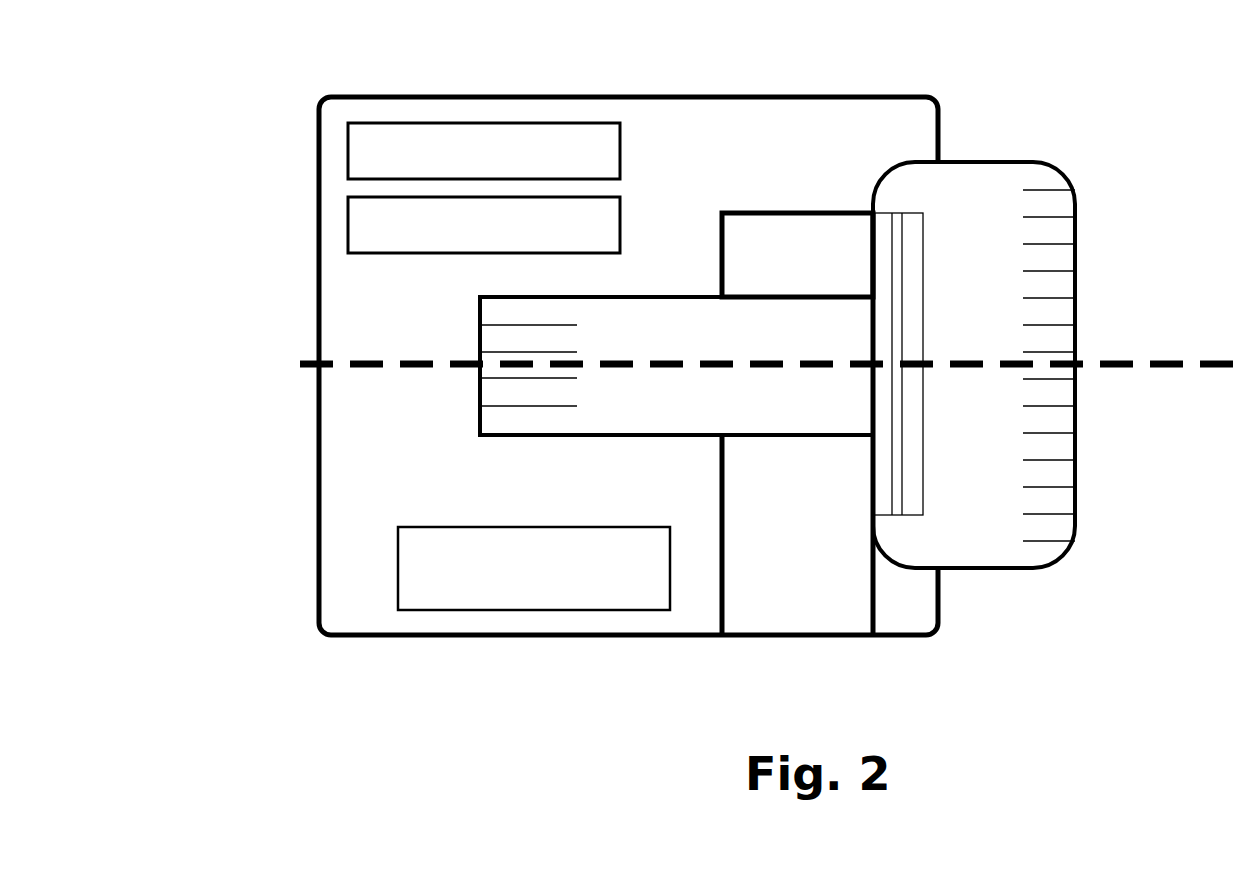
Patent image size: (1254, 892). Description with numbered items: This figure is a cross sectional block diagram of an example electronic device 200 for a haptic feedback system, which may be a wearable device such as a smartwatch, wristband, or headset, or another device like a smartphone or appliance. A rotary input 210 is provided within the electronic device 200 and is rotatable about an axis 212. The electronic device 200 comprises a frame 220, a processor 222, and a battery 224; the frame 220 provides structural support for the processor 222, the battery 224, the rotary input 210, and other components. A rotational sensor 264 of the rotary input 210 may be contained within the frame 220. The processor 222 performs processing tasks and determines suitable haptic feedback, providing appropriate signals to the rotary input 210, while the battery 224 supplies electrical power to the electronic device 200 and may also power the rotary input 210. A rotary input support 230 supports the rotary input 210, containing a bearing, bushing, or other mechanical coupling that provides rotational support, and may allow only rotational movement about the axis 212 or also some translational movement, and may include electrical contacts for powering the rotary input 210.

The electronic device 200 is at (701, 415).
The rotary input 210 is at (1125, 270).
The axis 212 is at (303, 365).
The frame 220 is at (400, 637).
The processor 222 is at (348, 147).
The battery 224 is at (348, 223).
The rotary input support 230 is at (772, 213).
The rotational sensor 264 is at (585, 610).